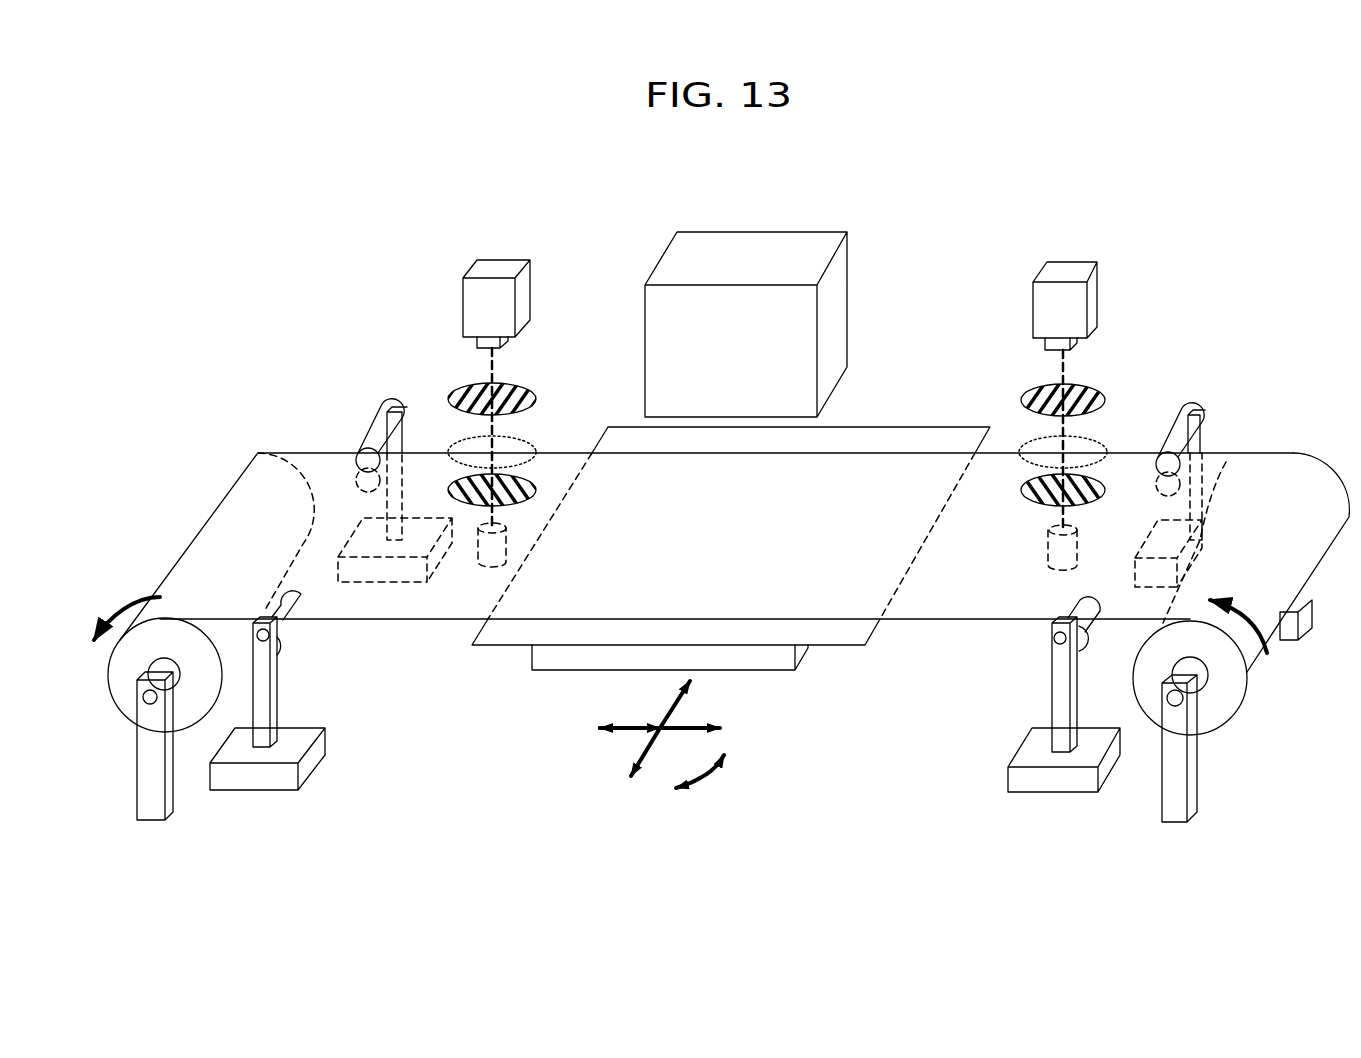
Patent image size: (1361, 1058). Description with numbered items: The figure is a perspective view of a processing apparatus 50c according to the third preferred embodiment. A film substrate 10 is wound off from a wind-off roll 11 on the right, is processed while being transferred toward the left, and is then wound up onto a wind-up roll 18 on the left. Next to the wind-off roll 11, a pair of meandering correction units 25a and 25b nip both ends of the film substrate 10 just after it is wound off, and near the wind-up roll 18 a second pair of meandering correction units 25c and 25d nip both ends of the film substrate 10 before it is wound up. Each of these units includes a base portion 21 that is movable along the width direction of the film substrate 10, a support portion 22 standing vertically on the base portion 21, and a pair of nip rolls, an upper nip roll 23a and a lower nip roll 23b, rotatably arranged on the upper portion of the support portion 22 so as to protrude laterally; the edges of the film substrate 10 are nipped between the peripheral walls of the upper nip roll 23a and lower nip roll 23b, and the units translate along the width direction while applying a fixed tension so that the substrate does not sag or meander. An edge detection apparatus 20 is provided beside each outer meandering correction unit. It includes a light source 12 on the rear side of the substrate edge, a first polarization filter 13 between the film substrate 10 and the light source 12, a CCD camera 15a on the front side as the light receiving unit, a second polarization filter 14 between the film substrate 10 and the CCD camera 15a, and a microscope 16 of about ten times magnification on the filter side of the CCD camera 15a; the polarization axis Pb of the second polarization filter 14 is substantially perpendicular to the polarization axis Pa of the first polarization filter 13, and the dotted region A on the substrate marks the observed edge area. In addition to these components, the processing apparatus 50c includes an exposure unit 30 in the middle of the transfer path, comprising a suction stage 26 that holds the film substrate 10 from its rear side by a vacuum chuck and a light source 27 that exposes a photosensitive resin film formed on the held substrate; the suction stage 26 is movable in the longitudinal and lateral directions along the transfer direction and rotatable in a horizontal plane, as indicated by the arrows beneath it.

The processing apparatus 50c is at (185, 311).
The film substrate 10 is at (410, 603).
The wind-off roll 11 is at (1244, 726).
The wind-up roll 18 is at (96, 726).
The exposure unit 30 is at (731, 451).
The light source 27 is at (840, 305).
The suction stage 26 is at (863, 442).
The edge detection apparatus 20 is at (1112, 396).
The CCD camera 15a is at (1090, 291).
The microscope 16 is at (1075, 345).
The second polarization filter 14 is at (1094, 400).
The first polarization filter 13 is at (1101, 485).
The light source 12 is at (1079, 550).
The imaging area A is at (1032, 443).
The polarization axis Pb is at (1025, 397).
The polarization axis Pa is at (1024, 497).
The meandering correction unit 25a is at (987, 711).
The meandering correction unit 25b is at (1214, 431).
The meandering correction unit 25c is at (258, 802).
The meandering correction unit 25d is at (346, 436).
The upper nip roll 23a is at (1077, 600).
The lower nip roll 23b is at (1088, 627).
The support portion 22 is at (1063, 700).
The base portion 21 is at (1019, 774).